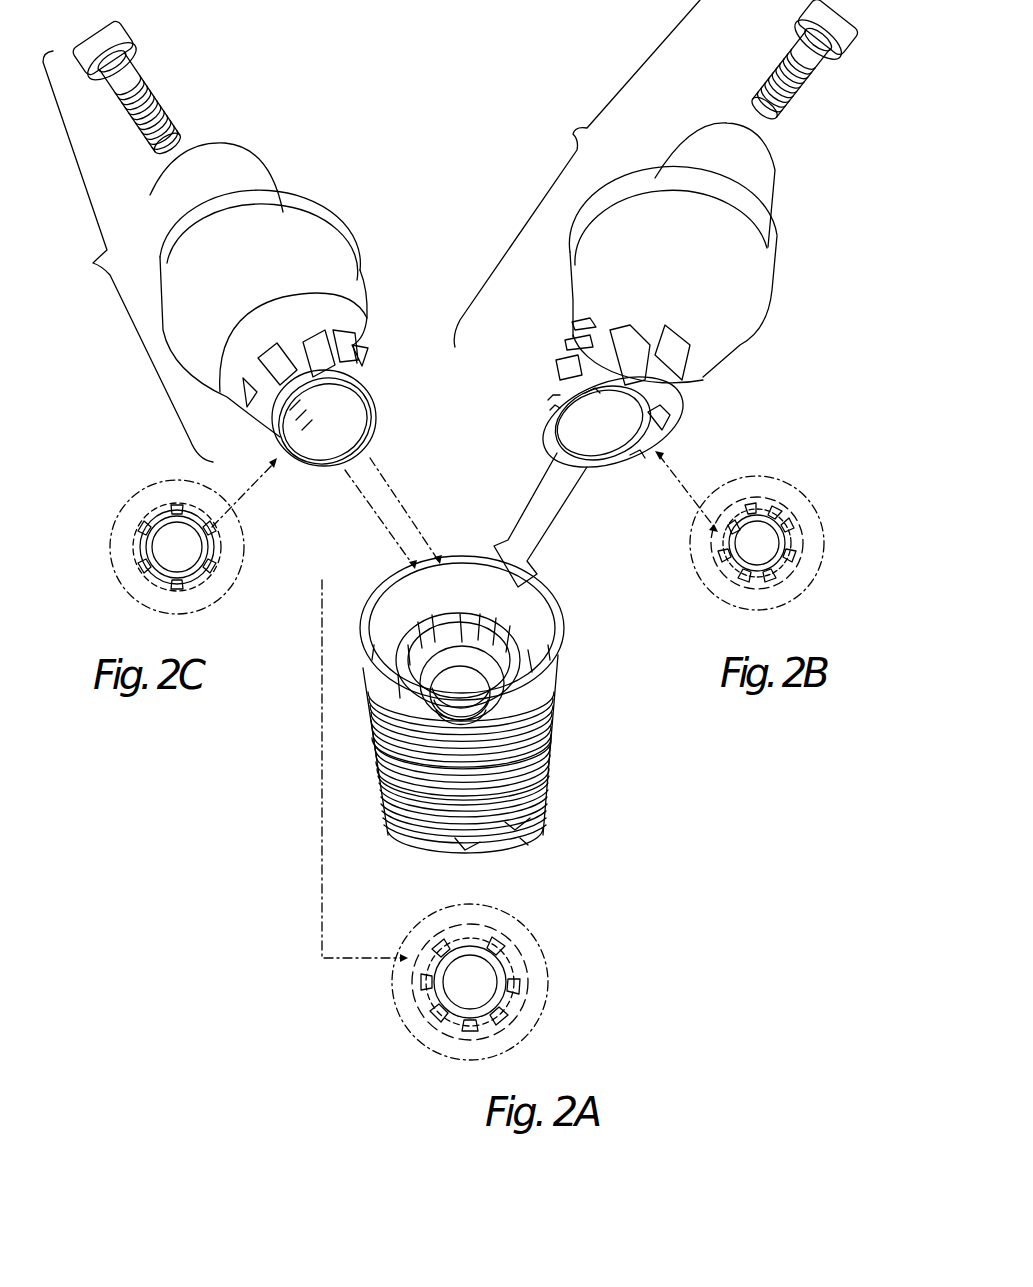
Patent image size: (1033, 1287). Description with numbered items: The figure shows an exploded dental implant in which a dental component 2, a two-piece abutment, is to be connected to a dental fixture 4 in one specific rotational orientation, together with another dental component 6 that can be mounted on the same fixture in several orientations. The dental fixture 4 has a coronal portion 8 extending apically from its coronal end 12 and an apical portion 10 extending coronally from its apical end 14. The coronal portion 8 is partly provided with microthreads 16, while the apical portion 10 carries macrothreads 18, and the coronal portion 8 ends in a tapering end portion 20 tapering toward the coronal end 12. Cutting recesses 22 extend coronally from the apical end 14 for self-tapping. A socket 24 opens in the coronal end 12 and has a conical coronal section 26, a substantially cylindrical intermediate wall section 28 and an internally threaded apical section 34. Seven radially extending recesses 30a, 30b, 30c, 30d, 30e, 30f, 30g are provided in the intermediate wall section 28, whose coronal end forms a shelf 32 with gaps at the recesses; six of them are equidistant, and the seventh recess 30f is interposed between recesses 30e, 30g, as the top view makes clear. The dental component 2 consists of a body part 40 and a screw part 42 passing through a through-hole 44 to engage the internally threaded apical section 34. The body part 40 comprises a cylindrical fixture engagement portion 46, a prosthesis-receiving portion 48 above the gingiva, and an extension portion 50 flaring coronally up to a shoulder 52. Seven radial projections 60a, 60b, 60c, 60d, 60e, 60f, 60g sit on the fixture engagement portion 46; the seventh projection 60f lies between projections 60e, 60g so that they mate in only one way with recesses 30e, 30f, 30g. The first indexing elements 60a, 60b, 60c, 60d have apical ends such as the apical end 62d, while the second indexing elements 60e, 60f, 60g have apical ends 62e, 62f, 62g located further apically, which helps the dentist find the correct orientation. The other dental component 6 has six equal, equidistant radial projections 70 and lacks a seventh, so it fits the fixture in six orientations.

In FIG. 2, the dental component 2 is at (577, 173).
In FIG. 2, the dental fixture 4 is at (471, 677).
In FIG. 2, the dental component 6 is at (205, 240).
In FIG. 2, the coronal portion 8 is at (590, 628).
In FIG. 2, the apical portion 10 is at (590, 738).
In FIG. 2, the coronal end 12 is at (555, 612).
In FIG. 2, the apical end 14 is at (473, 847).
In FIG. 2, the microthreads 16 is at (370, 740).
In FIG. 2, the macrothreads 18 is at (397, 803).
In FIG. 2, the tapering end portion 20 is at (543, 613).
In FIG. 2, the cutting recesses 22 is at (503, 830).
In FIG. 2, the socket 24 is at (470, 568).
In FIG. 2, the conical coronal section 26 is at (395, 660).
In FIG. 2, the intermediate wall section 28 is at (487, 630).
In FIG. 2, the indexing element 30a is at (462, 610).
In FIG. 2A, the indexing element 30a is at (508, 940).
In FIG. 2, the indexing element 30b is at (530, 650).
In FIG. 2A, the indexing element 30b is at (518, 972).
In FIG. 2A, the indexing element 30c is at (508, 1015).
In FIG. 2A, the indexing element 30d is at (468, 1032).
In FIG. 2A, the indexing element 30e is at (437, 1012).
In FIG. 2, the indexing element 30f is at (400, 690).
In FIG. 2A, the indexing element 30f is at (421, 980).
In FIG. 2, the indexing element 30g is at (395, 590).
In FIG. 2A, the indexing element 30g is at (436, 950).
In FIG. 2, the shelf 32 is at (428, 610).
In FIG. 2, the internally threaded apical section 34 is at (380, 787).
In FIG. 2, the body part 40 is at (808, 266).
In FIG. 2, the screw part 42 is at (803, 97).
In FIG. 2, the through-hole 44 is at (605, 455).
In FIG. 2, the fixture engagement portion 46 is at (667, 413).
In FIG. 2, the prosthesis-receiving portion 48 is at (757, 168).
In FIG. 2, the extension portion 50 is at (727, 291).
In FIG. 2, the shoulder 52 is at (768, 247).
In FIG. 2B, the indexing element 60a is at (725, 556).
In FIG. 2B, the indexing element 60b is at (748, 578).
In FIG. 2, the indexing element 60c is at (660, 437).
In FIG. 2B, the indexing element 60c is at (772, 572).
In FIG. 2, the indexing element 60d is at (683, 393).
In FIG. 2B, the indexing element 60d is at (790, 548).
In FIG. 2, the indexing element 60e is at (587, 330).
In FIG. 2B, the indexing element 60e is at (773, 510).
In FIG. 2, the indexing element 60f is at (577, 350).
In FIG. 2B, the indexing element 60f is at (751, 508).
In FIG. 2, the indexing element 60g is at (567, 377).
In FIG. 2B, the indexing element 60g is at (733, 524).
In FIG. 2, the apical end 62d is at (637, 460).
In FIG. 2, the apical end 62e is at (598, 392).
In FIG. 2, the apical end 62f is at (552, 410).
In FIG. 2, the apical end 62g is at (550, 400).
In FIG. 2, the radial projections 70 is at (358, 352).
In FIG. 2C, the radial projections 70 is at (152, 548).